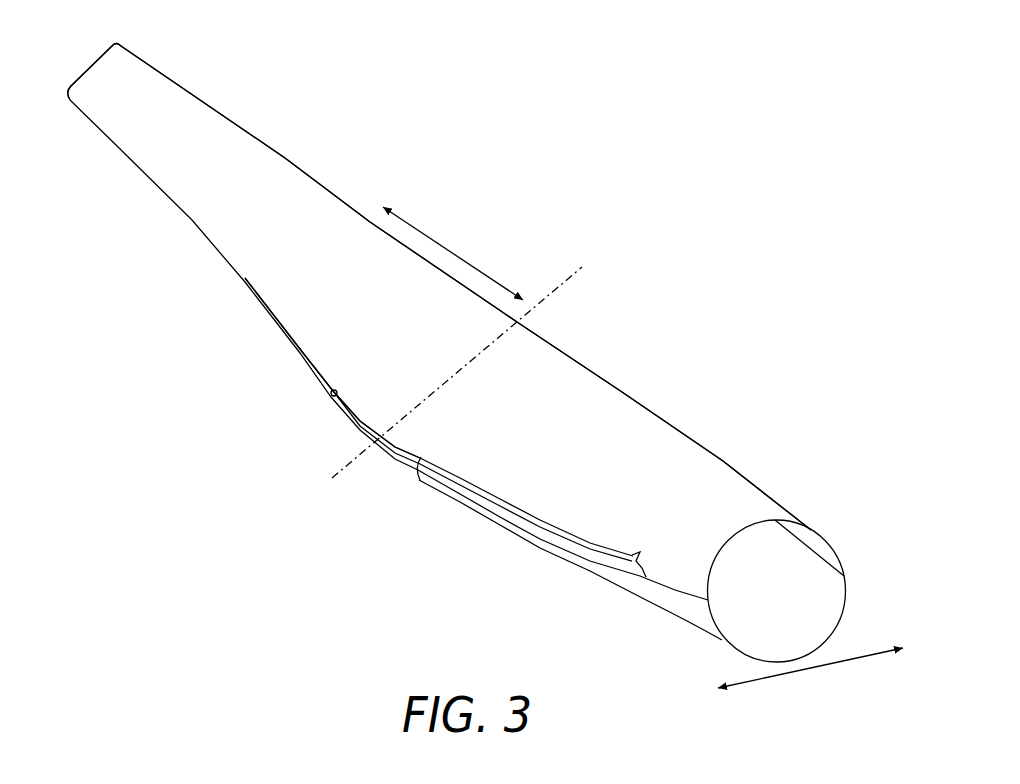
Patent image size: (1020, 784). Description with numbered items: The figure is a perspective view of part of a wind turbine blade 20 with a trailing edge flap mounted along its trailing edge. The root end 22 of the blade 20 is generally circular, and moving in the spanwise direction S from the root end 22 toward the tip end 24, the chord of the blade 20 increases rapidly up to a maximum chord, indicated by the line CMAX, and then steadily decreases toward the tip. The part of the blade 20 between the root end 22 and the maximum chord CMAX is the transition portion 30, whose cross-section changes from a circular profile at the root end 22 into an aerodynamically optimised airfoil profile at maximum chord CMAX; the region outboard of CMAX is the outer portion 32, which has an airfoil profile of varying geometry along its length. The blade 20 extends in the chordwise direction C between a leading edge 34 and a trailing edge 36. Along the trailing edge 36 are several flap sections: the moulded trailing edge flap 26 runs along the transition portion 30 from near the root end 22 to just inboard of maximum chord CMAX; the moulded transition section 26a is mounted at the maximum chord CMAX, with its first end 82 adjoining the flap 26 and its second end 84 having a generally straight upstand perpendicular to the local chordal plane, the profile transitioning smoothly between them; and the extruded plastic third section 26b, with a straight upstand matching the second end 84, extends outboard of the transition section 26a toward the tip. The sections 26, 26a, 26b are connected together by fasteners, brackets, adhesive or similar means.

The wind turbine blade 20 is at (618, 272).
The root end 22 is at (763, 505).
The tip end 24 is at (86, 58).
The trailing edge flap 26 is at (493, 515).
The transition section 26a is at (352, 426).
The third trailing edge flap section 26b is at (258, 298).
The transition portion 30 is at (547, 584).
The outer portion 32 is at (285, 158).
The leading edge 34 is at (624, 387).
The trailing edge 36 is at (116, 146).
The first end of transition section 82 is at (419, 461).
The second end of transition section 84 is at (335, 390).
The spanwise direction S is at (456, 252).
The chordwise direction C is at (808, 668).
The maximum chord CMAX is at (338, 482).